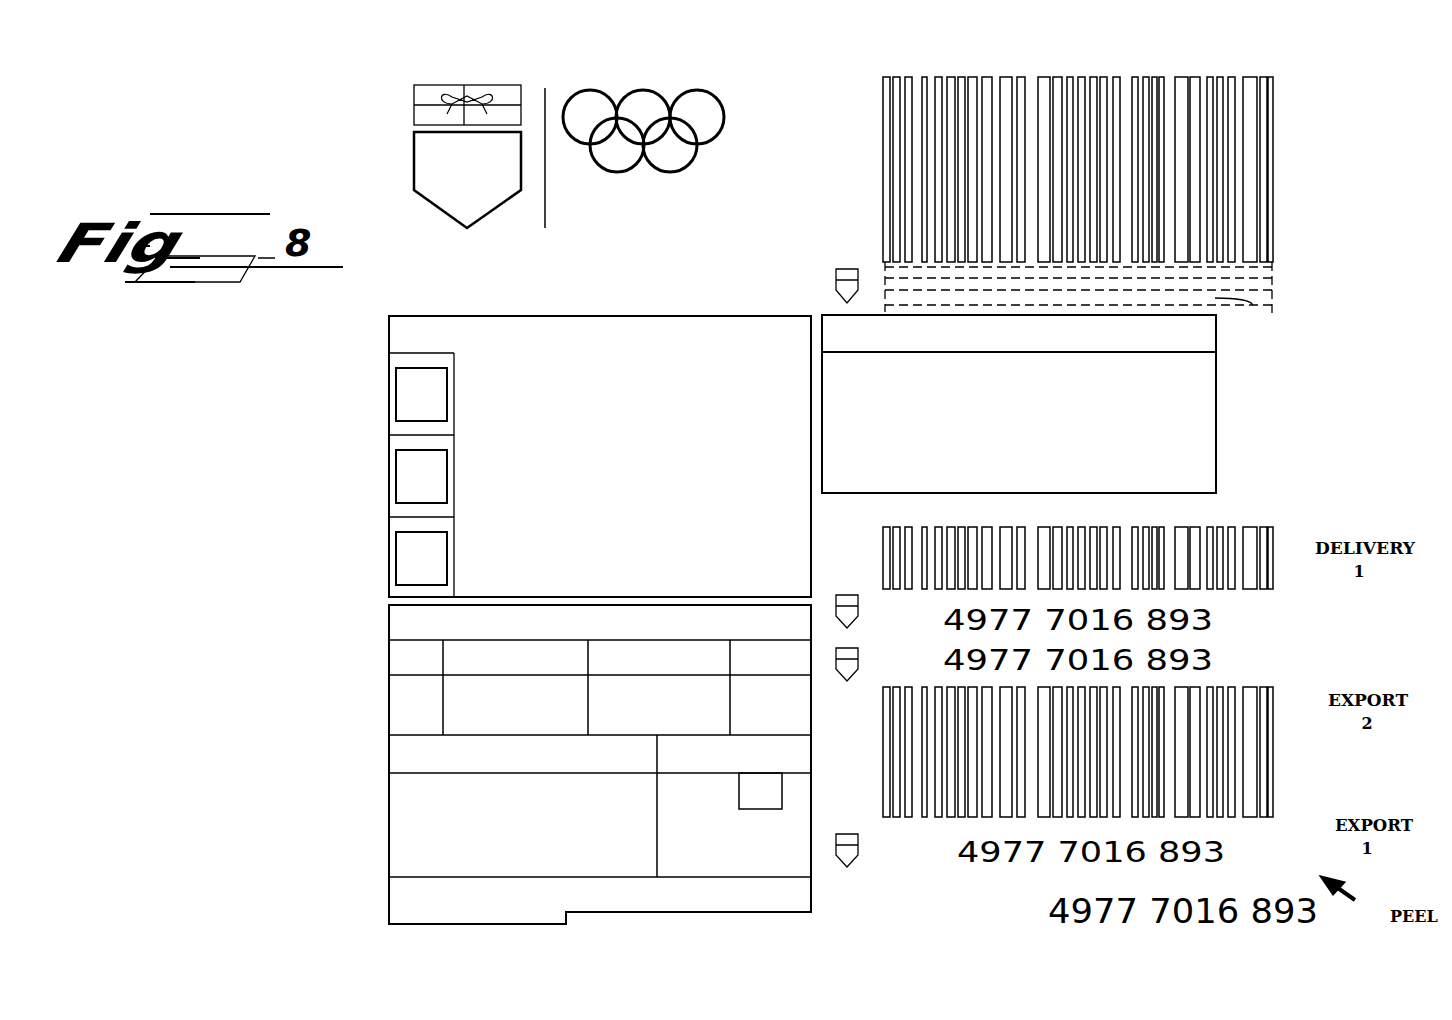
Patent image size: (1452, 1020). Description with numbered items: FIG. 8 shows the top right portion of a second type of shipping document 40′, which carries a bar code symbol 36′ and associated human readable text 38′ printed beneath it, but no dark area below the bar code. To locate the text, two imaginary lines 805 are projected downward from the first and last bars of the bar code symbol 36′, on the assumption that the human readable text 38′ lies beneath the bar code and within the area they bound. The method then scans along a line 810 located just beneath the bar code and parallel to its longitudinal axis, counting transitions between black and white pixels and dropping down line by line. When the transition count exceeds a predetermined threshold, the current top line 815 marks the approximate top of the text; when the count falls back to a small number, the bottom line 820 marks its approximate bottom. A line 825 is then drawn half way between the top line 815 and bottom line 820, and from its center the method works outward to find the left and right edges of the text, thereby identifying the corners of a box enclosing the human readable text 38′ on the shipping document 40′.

The bar code symbol 36′ is at (1273, 172).
The human readable text 38′ is at (1265, 308).
The shipping document 40′ is at (876, 506).
The imaginary lines 805 is at (885, 268).
The scan line 810 is at (1248, 268).
The top line 815 is at (1240, 282).
The bottom line 820 is at (1252, 305).
The center line 825 is at (888, 292).